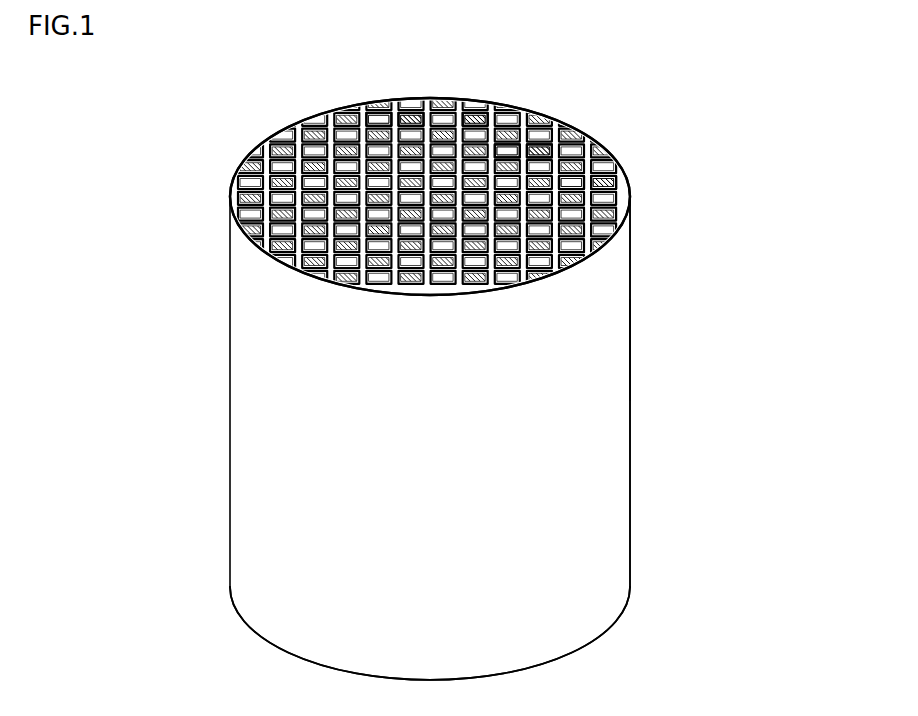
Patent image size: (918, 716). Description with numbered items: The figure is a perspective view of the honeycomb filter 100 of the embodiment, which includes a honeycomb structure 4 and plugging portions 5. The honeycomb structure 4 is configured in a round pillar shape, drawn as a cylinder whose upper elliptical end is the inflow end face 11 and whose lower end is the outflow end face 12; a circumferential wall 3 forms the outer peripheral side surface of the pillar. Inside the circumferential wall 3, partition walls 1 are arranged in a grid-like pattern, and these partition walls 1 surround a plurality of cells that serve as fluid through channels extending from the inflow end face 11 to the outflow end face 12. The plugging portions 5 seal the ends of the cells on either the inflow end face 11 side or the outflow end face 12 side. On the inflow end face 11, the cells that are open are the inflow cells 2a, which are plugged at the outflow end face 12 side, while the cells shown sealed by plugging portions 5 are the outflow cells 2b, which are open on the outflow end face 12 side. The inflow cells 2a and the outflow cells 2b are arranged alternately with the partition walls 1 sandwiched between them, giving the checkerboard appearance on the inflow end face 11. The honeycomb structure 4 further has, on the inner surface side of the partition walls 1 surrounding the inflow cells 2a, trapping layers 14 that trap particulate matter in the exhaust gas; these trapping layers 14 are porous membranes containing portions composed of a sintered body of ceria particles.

The honeycomb filter 100 is at (770, 44).
The partition walls 1 is at (523, 160).
The inflow cells 2a is at (566, 183).
The outflow cells 2b is at (590, 197).
The circumferential wall 3 is at (597, 328).
The honeycomb structure 4 is at (634, 239).
The plugging portions 5 is at (470, 118).
The inflow end face 11 is at (307, 111).
The outflow end face 12 is at (252, 645).
The trapping layers 14 is at (395, 117).